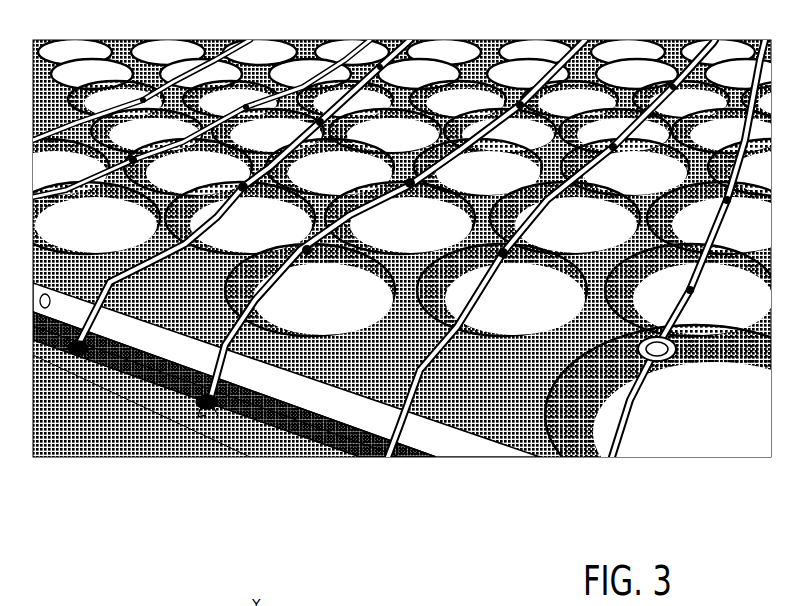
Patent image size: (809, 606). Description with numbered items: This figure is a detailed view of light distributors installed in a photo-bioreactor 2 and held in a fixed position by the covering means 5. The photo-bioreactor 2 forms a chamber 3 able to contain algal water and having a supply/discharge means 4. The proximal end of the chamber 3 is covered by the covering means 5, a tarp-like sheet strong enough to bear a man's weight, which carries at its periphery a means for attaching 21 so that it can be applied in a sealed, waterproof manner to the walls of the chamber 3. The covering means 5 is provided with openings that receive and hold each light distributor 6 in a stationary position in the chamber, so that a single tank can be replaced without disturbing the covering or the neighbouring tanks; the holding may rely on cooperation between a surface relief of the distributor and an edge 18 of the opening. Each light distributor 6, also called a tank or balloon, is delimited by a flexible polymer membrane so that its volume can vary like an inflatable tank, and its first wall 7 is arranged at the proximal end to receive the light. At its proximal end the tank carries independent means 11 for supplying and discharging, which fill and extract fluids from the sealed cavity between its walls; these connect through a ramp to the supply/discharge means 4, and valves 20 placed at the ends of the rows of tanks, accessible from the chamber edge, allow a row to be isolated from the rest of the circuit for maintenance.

The photo-bioreactor 2 is at (402, 296).
The chamber 3 is at (286, 410).
The supply/discharge means 4 is at (515, 287).
The covering means 5 is at (402, 286).
The light distributor 6 is at (659, 425).
The first wall 7 is at (677, 425).
The independent means for supplying and discharging 11 is at (689, 429).
The edge of the opening 18 is at (286, 393).
The valves 20 is at (175, 465).
The means for attaching 21 is at (234, 423).